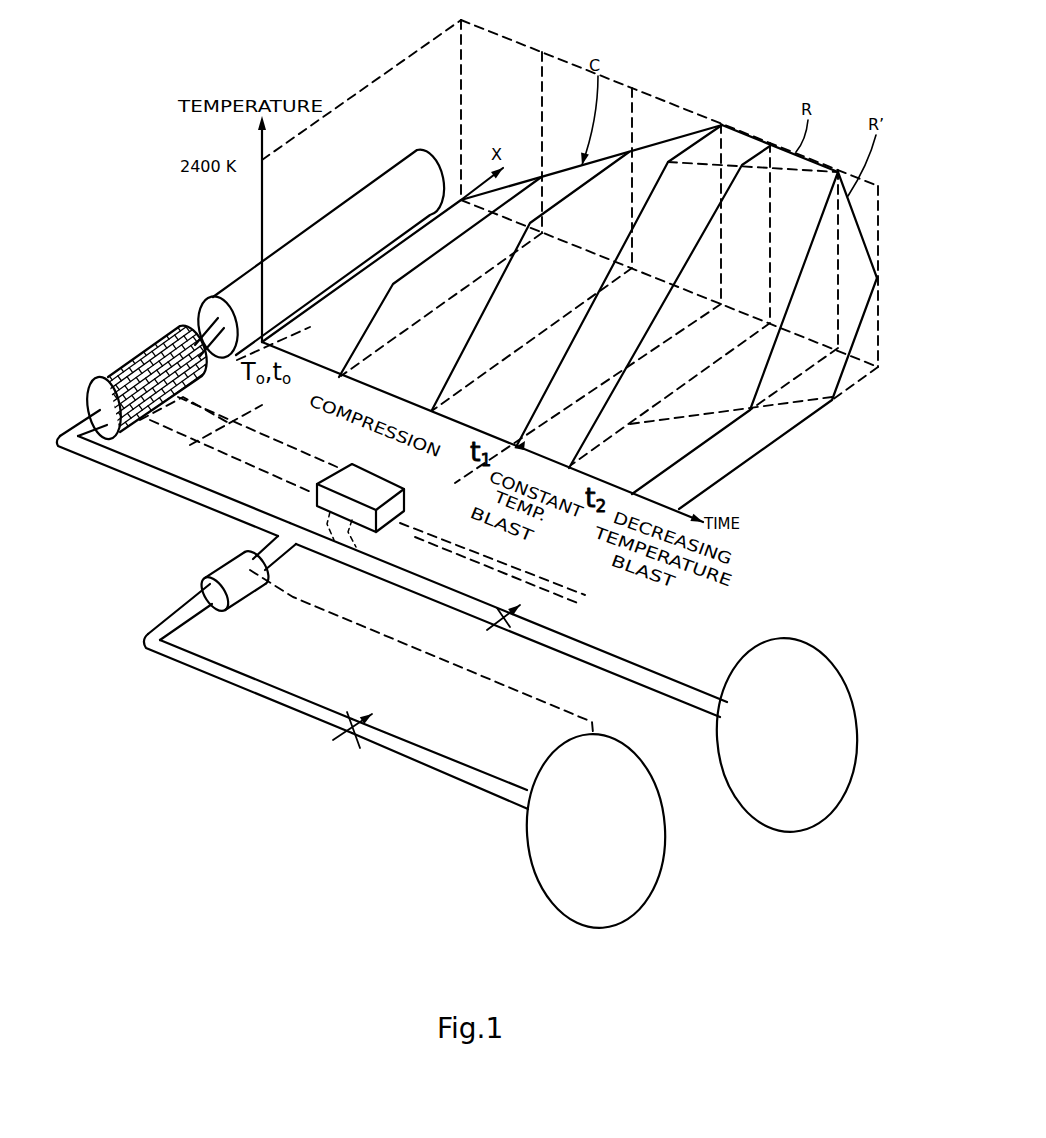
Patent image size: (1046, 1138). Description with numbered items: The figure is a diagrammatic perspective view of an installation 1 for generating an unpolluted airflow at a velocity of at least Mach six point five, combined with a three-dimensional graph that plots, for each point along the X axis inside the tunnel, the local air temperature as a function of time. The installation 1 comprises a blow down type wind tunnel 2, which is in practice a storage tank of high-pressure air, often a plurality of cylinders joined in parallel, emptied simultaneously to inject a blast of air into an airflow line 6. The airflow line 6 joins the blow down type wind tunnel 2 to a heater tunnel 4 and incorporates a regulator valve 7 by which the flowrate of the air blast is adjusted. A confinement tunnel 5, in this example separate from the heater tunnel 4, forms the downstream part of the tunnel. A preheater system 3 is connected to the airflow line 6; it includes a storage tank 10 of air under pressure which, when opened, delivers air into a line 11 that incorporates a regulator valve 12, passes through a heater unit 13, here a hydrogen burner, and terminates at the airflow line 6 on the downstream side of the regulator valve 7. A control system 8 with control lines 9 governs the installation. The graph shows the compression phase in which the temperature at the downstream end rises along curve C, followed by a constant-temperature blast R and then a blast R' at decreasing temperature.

The installation 1 is at (693, 887).
The blow down type wind tunnel 2 is at (802, 625).
The preheater system 3 is at (190, 688).
The heater tunnel 4 is at (135, 352).
The confinement tunnel 5 is at (367, 188).
The airflow line 6 is at (402, 586).
The regulator valve 7 is at (505, 622).
The control system 8 is at (404, 487).
The control lines 9 is at (246, 429).
The storage tank 10 is at (533, 862).
The line 11 is at (450, 757).
The regulator valve 12 is at (355, 734).
The heater unit 13 is at (250, 600).